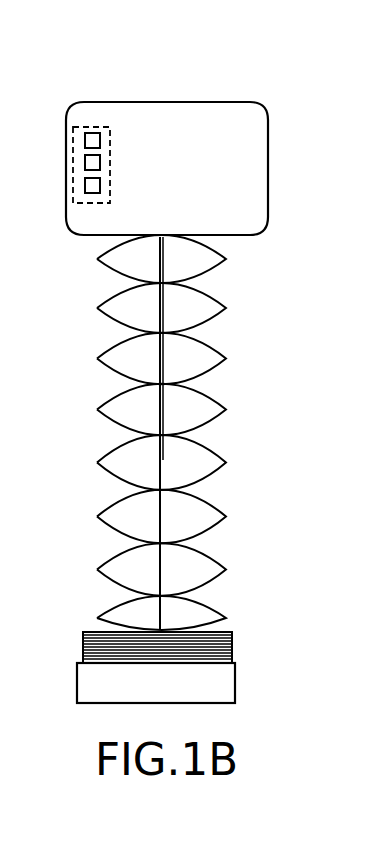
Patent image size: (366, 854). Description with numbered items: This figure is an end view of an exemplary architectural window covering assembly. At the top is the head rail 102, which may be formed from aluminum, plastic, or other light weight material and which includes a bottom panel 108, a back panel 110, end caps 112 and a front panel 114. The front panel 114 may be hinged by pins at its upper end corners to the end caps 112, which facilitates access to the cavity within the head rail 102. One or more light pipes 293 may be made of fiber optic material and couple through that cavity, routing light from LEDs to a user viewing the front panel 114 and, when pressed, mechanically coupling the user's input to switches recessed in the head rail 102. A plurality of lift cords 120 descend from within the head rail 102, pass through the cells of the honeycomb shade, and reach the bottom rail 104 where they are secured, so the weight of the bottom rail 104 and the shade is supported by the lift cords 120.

The head rail 102 is at (195, 83).
The bottom rail 104 is at (173, 695).
The bottom panel 108 is at (248, 235).
The back panel 110 is at (268, 152).
The end caps 112 is at (193, 181).
The front panel 114 is at (73, 106).
The lift cords 120 is at (163, 412).
The light pipes 293 is at (73, 153).